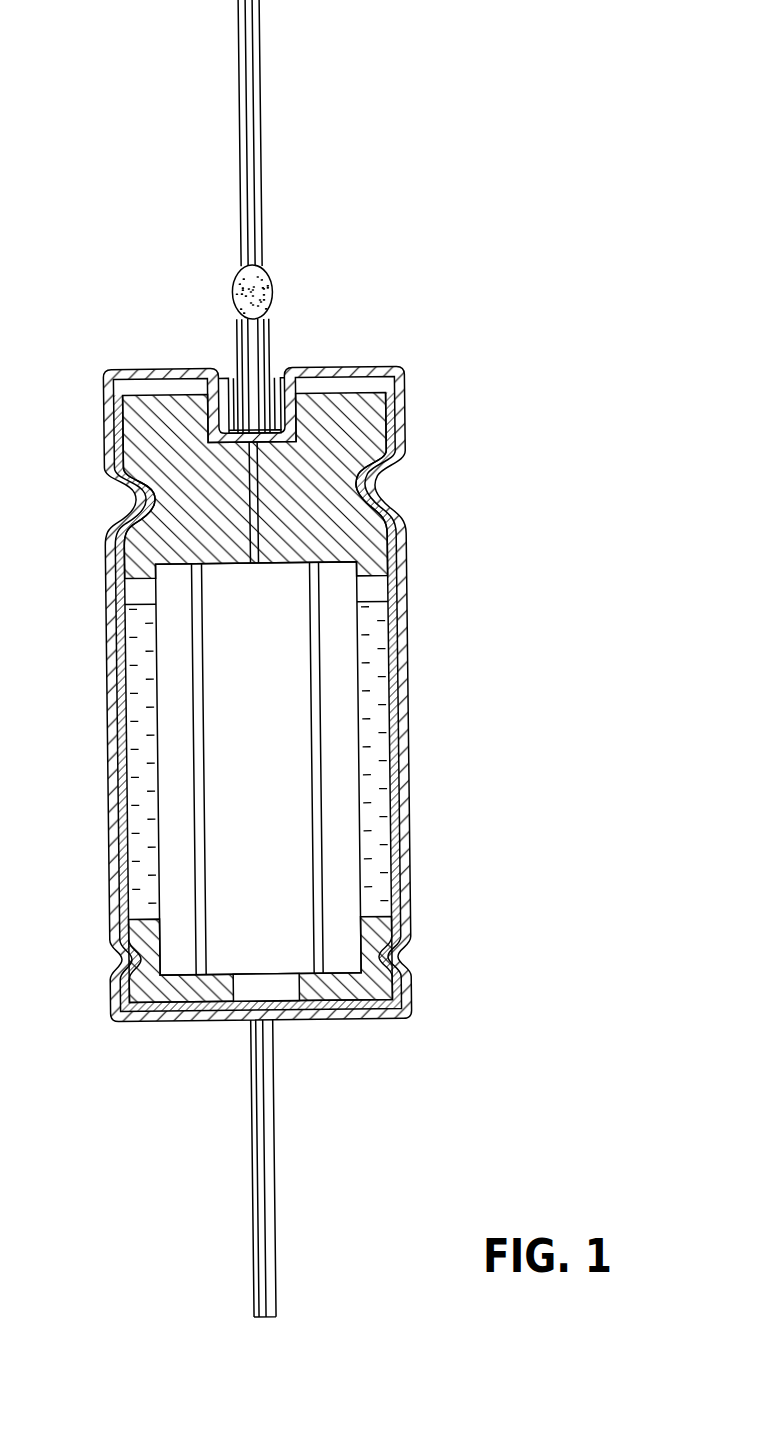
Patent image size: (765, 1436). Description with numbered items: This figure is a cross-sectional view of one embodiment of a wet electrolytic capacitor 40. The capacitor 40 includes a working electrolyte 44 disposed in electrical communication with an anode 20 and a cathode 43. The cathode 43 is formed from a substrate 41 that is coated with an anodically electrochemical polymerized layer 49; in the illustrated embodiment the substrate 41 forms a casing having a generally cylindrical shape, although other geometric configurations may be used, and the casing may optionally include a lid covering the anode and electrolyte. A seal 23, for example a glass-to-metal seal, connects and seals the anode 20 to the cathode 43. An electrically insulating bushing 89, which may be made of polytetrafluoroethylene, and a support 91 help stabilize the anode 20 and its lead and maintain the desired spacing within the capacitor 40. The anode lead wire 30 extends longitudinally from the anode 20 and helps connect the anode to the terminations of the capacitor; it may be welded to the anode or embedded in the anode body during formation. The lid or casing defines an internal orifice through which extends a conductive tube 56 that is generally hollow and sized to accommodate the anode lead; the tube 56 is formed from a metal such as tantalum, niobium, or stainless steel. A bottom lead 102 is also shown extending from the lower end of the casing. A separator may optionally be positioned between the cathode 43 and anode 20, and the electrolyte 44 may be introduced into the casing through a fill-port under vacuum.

The electrolytic capacitor 40 is at (460, 272).
The substrate 41 is at (102, 423).
The cathode 43 is at (100, 770).
The anodically electrochemical polymerized layer 49 is at (122, 548).
The electrically insulating bushing 89 is at (368, 547).
The seal 23 is at (278, 372).
The conductive tube 56 is at (230, 335).
The anode lead wire 30 is at (255, 517).
The anode 20 is at (333, 734).
The working electrolyte 44 is at (372, 668).
The support 91 is at (372, 987).
The bottom lead 102 is at (273, 1210).